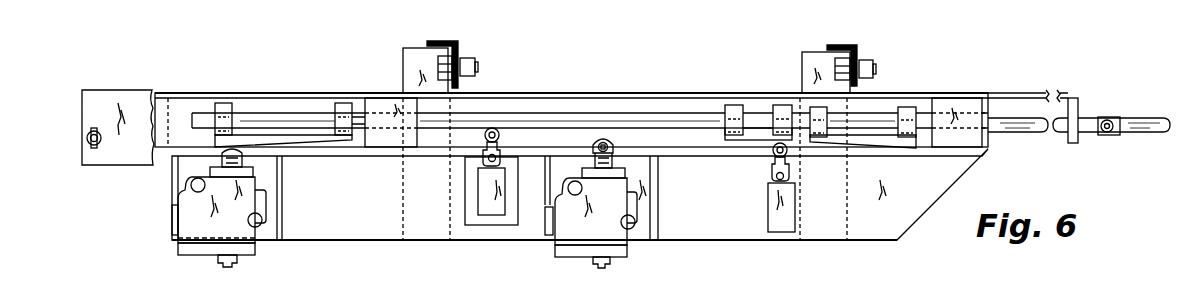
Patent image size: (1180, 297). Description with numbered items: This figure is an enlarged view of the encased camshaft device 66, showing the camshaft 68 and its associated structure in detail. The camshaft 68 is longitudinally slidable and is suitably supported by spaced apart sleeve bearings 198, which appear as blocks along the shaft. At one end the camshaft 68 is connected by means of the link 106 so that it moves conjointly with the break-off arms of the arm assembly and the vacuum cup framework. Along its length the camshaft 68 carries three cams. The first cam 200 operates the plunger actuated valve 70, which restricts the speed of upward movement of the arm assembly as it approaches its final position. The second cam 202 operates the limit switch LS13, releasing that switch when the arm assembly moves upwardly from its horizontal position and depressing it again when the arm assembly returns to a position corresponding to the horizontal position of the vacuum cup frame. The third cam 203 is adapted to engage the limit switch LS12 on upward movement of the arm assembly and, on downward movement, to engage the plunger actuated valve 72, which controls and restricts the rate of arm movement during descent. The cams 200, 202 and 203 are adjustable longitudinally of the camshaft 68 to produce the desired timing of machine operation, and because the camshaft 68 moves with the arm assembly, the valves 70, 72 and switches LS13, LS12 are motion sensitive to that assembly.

The encased camshaft device 66 is at (620, 97).
The camshaft 68 is at (1013, 133).
The plunger actuated valve 70 is at (188, 194).
The plunger actuated valve 72 is at (566, 193).
The link 106 is at (1148, 133).
The sleeve bearings 198 is at (961, 146).
The first cam 200 is at (293, 140).
The second cam 202 is at (748, 140).
The third cam 203 is at (905, 148).
The limit switch LS13 is at (499, 213).
The limit switch LS12 is at (783, 222).